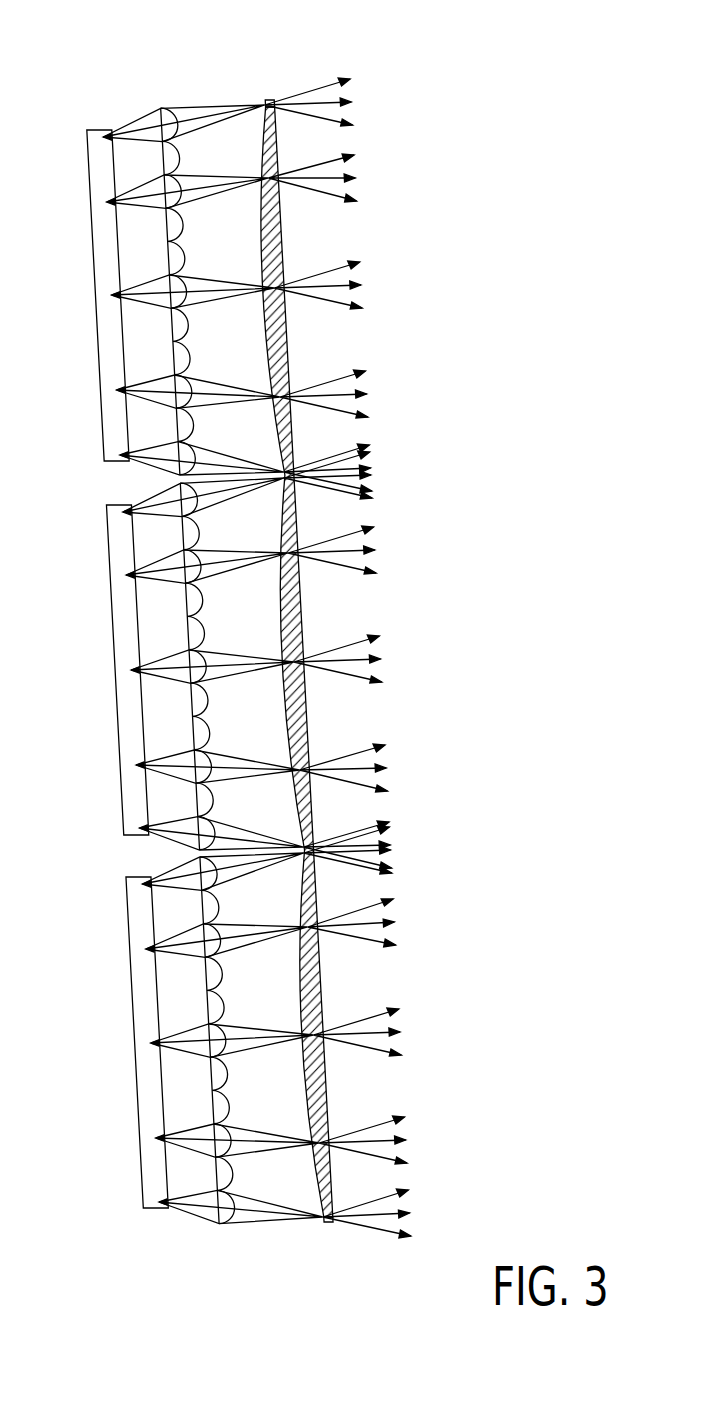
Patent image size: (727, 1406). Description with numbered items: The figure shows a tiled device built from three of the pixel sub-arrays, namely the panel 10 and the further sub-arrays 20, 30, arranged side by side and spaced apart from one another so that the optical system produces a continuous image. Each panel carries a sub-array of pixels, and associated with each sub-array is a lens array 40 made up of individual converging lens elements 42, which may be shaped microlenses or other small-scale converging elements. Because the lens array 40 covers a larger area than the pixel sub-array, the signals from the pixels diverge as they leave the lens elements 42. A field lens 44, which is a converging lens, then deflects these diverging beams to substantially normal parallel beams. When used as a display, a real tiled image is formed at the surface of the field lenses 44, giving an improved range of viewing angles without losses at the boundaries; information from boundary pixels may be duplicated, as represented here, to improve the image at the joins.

The panel 10 is at (95, 330).
The sub-array 20 is at (117, 722).
The sub-array 30 is at (138, 1087).
The lens array 40 is at (160, 665).
The lens element 42 is at (185, 425).
The field lens 44 is at (268, 100).